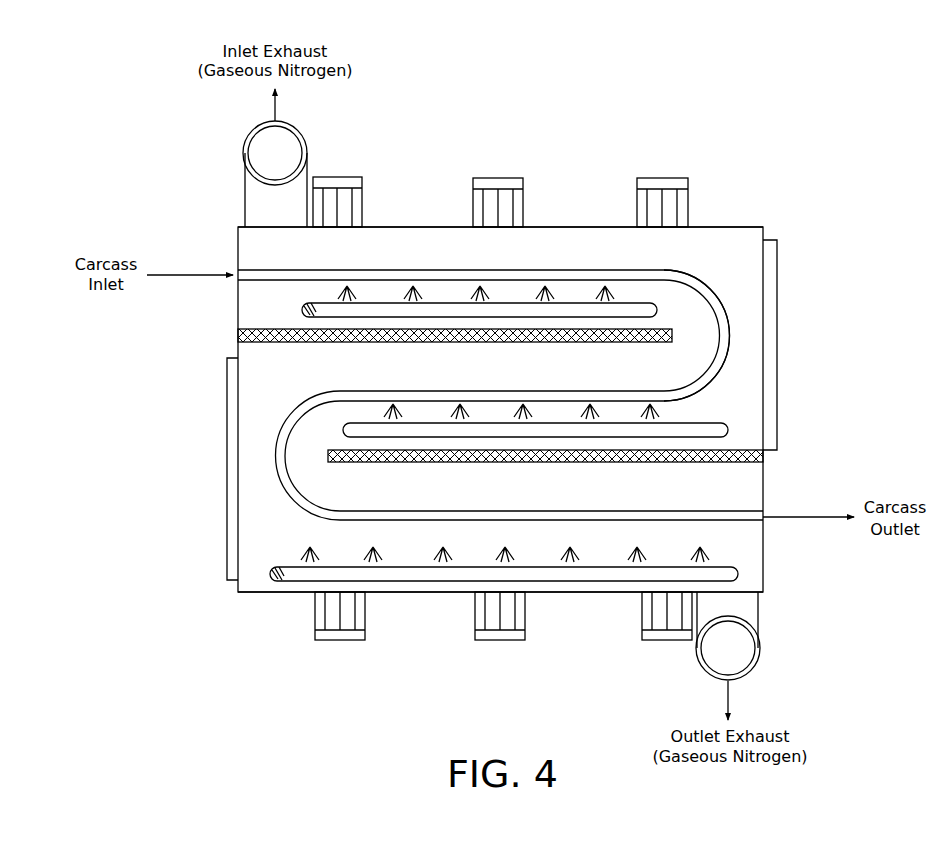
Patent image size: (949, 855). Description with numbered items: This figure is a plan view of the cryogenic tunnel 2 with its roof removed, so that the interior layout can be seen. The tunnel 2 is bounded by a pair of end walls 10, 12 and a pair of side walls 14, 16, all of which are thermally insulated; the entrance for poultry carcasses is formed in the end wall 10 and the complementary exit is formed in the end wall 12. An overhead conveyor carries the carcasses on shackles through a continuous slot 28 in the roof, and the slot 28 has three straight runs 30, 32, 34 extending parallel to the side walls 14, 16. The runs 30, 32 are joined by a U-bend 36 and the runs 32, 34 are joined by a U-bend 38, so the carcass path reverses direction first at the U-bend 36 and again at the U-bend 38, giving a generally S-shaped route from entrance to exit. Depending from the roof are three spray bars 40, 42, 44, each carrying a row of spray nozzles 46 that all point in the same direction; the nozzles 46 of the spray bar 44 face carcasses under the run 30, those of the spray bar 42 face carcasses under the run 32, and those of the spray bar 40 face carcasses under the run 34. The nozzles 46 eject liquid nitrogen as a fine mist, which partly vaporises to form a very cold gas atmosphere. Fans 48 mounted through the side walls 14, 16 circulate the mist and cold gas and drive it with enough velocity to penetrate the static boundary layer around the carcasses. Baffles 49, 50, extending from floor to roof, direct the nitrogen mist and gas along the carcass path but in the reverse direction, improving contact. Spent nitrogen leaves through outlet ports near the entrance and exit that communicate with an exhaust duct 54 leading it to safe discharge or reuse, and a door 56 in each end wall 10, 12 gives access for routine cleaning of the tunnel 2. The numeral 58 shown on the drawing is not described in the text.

The tunnel 2 is at (221, 241).
The end wall 10 is at (238, 300).
The end wall 12 is at (757, 553).
The side wall 14 is at (440, 594).
The side wall 16 is at (436, 225).
The slot 28 is at (682, 273).
The straight run 30 is at (514, 268).
The straight run 32 is at (486, 389).
The straight run 34 is at (540, 509).
The U-bend 36 is at (731, 328).
The U-bend 38 is at (276, 452).
The spray bar 40 is at (275, 582).
The spray bar 42 is at (370, 420).
The spray bar 44 is at (305, 306).
The spray nozzle 46 is at (618, 302).
The fan 48 is at (337, 177).
The baffle 49 is at (616, 466).
The baffle 50 is at (238, 334).
The exhaust duct 54 is at (245, 203).
The door 56 is at (227, 560).
The right side panel 58 is at (778, 362).